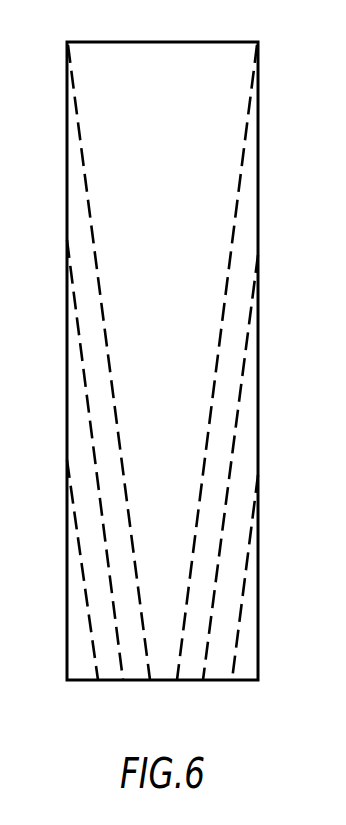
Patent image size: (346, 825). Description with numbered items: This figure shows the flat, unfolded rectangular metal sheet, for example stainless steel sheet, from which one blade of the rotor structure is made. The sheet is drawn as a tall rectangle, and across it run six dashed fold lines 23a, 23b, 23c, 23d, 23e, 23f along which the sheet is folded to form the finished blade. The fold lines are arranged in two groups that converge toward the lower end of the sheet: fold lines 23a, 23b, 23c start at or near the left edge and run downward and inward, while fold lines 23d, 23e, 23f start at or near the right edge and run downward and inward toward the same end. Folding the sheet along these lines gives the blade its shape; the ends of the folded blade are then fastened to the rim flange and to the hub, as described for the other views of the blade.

The fold line 23a is at (85, 602).
The fold line 23b is at (101, 331).
The fold line 23c is at (97, 285).
The fold line 23d is at (213, 390).
The fold line 23e is at (230, 476).
The fold line 23f is at (247, 575).